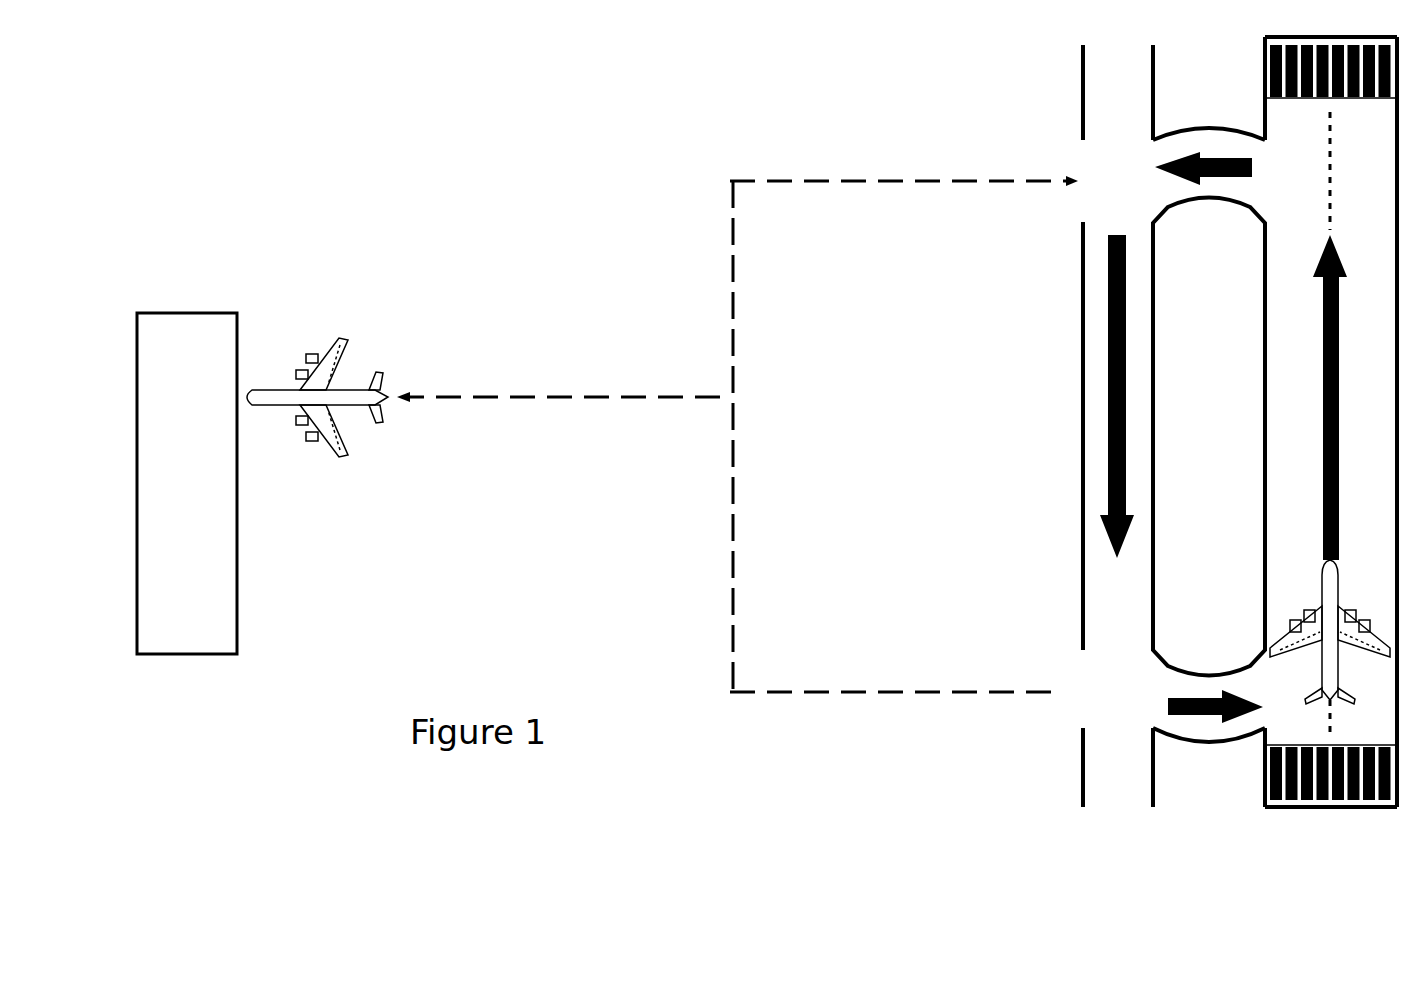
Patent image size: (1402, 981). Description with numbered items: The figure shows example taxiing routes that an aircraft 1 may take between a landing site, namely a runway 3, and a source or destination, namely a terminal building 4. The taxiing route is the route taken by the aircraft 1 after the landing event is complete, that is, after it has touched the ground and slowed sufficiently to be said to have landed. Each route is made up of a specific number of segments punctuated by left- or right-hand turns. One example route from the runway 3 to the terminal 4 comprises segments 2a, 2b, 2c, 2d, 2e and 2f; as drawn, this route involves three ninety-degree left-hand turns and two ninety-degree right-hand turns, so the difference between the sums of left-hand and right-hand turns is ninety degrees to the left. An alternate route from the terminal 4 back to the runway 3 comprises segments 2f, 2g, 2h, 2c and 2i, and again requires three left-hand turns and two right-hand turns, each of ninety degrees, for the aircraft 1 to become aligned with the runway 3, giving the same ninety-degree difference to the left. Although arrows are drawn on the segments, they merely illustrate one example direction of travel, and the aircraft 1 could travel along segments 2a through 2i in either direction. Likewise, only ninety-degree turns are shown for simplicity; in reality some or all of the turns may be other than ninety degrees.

The aircraft 1 is at (362, 450).
The taxiing route segment 2a is at (1310, 358).
The taxiing route segment 2b is at (1223, 146).
The taxiing route segment 2c is at (1096, 390).
The taxiing route segment 2d is at (921, 680).
The taxiing route segment 2e is at (724, 508).
The taxiing route segment 2f is at (566, 383).
The taxiing route segment 2g is at (724, 288).
The taxiing route segment 2h is at (846, 198).
The taxiing route segment 2i is at (1198, 726).
The runway 3 is at (1260, 264).
The terminal building 4 is at (197, 338).